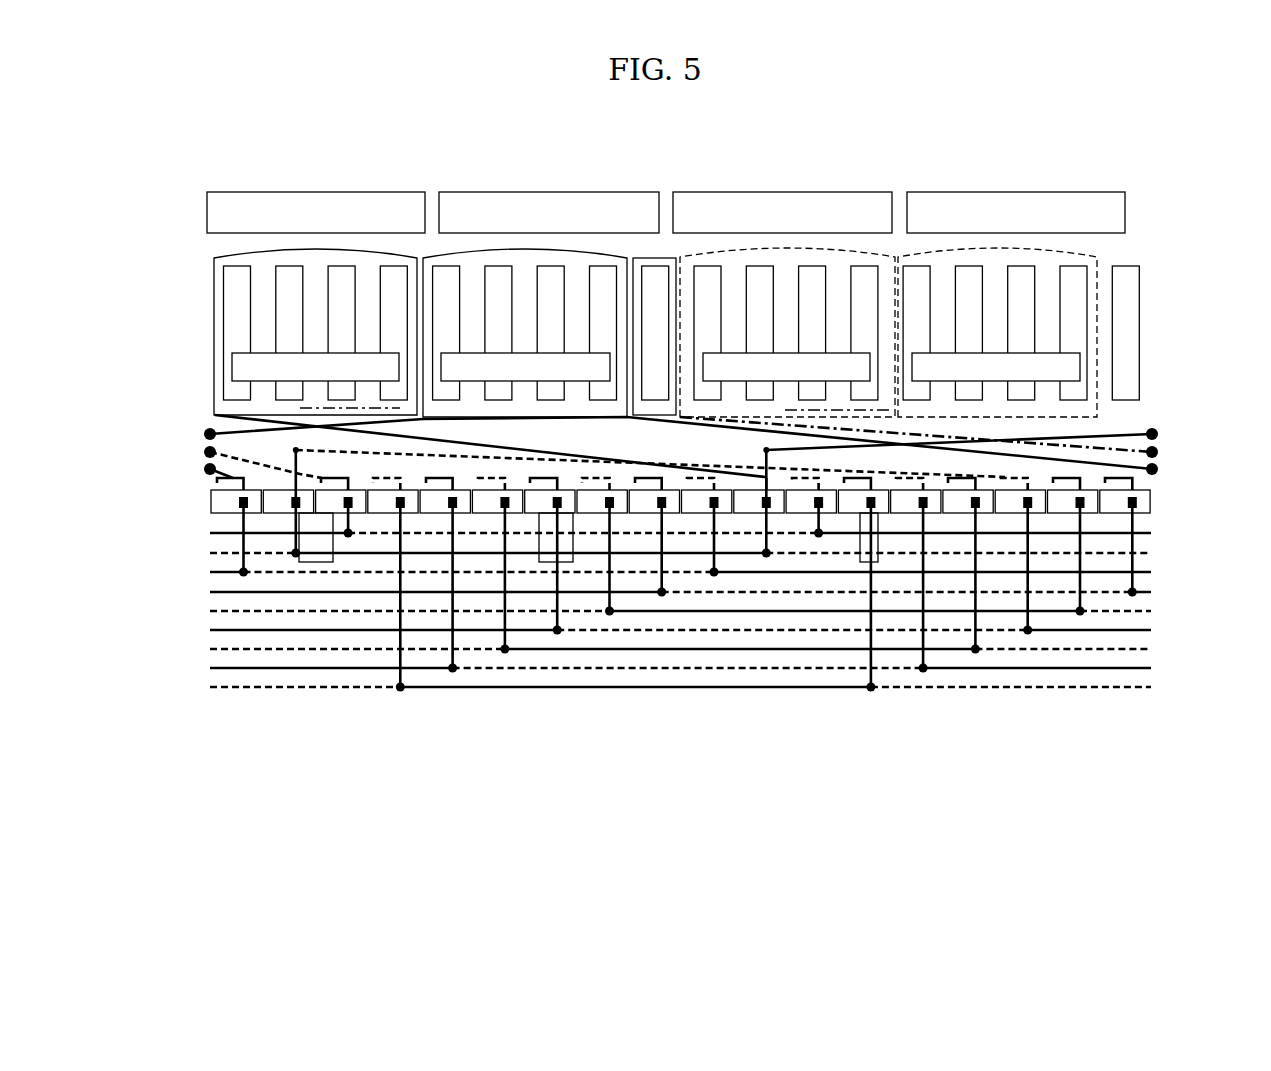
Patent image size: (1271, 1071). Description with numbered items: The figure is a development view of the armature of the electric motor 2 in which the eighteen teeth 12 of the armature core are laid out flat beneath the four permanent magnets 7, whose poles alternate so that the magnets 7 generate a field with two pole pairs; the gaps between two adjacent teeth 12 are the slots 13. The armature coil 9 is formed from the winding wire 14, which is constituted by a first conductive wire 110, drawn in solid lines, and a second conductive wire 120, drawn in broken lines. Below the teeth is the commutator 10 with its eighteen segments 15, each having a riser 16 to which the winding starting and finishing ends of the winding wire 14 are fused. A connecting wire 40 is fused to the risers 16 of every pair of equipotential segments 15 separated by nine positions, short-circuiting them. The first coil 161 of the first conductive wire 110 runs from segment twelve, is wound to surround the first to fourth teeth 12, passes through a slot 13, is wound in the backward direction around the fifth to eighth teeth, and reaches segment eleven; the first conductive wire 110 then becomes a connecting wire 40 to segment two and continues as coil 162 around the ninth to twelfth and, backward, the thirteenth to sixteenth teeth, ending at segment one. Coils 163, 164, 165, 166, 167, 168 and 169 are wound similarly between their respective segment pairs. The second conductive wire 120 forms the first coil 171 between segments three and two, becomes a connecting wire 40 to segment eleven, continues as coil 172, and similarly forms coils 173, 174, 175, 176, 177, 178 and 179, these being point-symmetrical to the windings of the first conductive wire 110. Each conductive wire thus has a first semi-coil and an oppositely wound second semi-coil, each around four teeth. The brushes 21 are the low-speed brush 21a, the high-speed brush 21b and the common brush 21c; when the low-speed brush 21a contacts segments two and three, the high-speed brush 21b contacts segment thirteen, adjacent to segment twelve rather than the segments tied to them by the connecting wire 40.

The motor 2 is at (1037, 158).
The permanent magnet 7 is at (408, 192).
The armature coil 9 is at (598, 246).
The commutator 10 is at (1158, 497).
The tooth 12 is at (232, 288).
The slot 13 is at (262, 292).
The winding wire 14 is at (669, 272).
The segment 15 is at (1140, 506).
The riser 16 is at (240, 513).
The brush 21 is at (691, 508).
The low-speed brush 21a is at (315, 562).
The high-speed brush 21b is at (873, 562).
The common brush 21c is at (566, 562).
The connecting wire 40 is at (1160, 600).
The first conductive wire 110 is at (681, 446).
The second conductive wire 120 is at (681, 447).
The first coil 161 is at (768, 480).
The coil 162 is at (240, 478).
The coil 163 is at (668, 480).
The coil 164 is at (1085, 480).
The coil 165 is at (592, 480).
The coil 166 is at (978, 480).
The coil 167 is at (456, 480).
The coil 168 is at (877, 480).
The coil 169 is at (363, 480).
The first coil 171 is at (762, 250).
The coil 172 is at (725, 480).
The coil 173 is at (232, 480).
The coil 174 is at (625, 480).
The coil 175 is at (1034, 480).
The coil 176 is at (520, 480).
The coil 177 is at (930, 480).
The coil 178 is at (412, 480).
The coil 179 is at (843, 480).